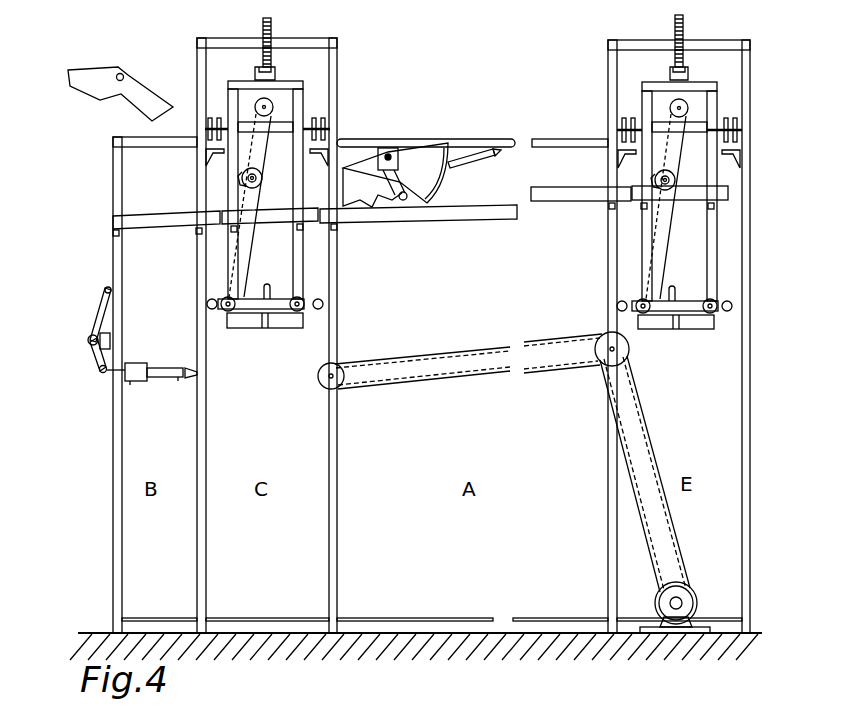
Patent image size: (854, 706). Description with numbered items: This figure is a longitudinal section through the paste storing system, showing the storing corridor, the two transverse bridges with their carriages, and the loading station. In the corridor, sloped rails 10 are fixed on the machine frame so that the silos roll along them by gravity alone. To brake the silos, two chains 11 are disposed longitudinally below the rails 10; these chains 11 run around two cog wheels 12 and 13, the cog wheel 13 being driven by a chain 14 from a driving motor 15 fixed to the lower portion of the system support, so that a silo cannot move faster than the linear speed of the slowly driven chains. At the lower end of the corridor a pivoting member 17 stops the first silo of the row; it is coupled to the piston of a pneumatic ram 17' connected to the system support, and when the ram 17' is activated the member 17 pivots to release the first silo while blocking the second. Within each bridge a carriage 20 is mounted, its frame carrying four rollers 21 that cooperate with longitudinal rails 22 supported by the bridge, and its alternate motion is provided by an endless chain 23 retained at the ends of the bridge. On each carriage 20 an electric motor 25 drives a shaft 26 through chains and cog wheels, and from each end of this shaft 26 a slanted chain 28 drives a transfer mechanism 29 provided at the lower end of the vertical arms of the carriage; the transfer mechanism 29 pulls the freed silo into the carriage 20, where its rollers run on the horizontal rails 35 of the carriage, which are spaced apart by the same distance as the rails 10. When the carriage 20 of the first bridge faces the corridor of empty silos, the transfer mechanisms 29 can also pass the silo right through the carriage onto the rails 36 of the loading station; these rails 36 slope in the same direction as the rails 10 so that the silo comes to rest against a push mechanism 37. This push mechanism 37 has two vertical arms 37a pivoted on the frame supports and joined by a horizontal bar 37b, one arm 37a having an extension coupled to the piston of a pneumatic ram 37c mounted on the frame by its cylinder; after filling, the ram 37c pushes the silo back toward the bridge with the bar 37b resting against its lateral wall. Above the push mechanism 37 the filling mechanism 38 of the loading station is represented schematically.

The rails 10 is at (486, 211).
The chains 11 is at (480, 346).
The cog wheel 12 is at (326, 378).
The cog wheel 13 is at (620, 351).
The chain 14 is at (654, 436).
The driving motor 15 is at (685, 598).
The pivoting member 17 is at (395, 156).
The pneumatic ram 17' is at (479, 135).
The carriage 20 is at (300, 100).
The rollers 21 is at (208, 137).
The longitudinal rails 22 is at (216, 160).
The endless chain 23 is at (272, 27).
The electric motor 25 is at (266, 100).
The shaft 26 is at (256, 182).
The slanted chain 28 is at (240, 258).
The transfer mechanism 29 is at (312, 300).
The rails 35 is at (269, 222).
The rails 36 is at (165, 214).
The push mechanism 37 is at (132, 360).
The vertical arms 37a is at (110, 322).
The horizontal bar 37b is at (112, 292).
The pneumatic ram 37c is at (162, 384).
The filling mechanism 38 is at (150, 43).